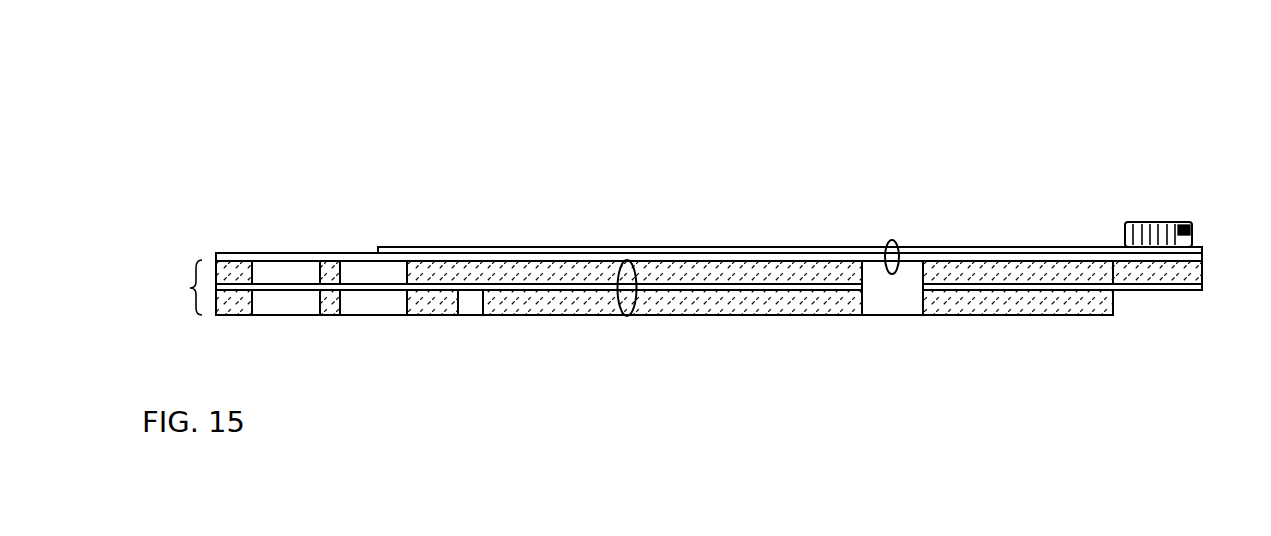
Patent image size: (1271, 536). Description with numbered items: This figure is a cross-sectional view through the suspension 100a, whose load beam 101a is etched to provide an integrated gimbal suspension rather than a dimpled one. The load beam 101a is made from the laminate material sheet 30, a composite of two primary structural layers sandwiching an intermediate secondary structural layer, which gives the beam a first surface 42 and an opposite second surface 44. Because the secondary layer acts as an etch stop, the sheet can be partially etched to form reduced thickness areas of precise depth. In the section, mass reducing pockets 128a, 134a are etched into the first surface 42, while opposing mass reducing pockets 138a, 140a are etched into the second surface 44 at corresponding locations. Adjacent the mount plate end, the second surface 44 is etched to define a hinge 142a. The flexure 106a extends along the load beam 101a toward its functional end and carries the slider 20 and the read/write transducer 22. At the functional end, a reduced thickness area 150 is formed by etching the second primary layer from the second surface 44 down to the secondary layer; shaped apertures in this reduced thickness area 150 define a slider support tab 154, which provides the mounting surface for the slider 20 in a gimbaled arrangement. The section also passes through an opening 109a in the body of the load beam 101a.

The suspension 100a is at (198, 166).
The laminate material sheet 30 is at (179, 287).
The first surface 42 is at (733, 258).
The second surface 44 is at (690, 317).
The mass reducing pocket 128a is at (277, 272).
The mass reducing pocket 134a is at (360, 265).
The mass reducing pocket 138a is at (292, 305).
The mass reducing pocket 140a is at (363, 305).
The hinge 142a is at (472, 305).
The load beam 101a is at (627, 258).
The flexure 106a is at (890, 240).
The opening 109a is at (897, 295).
The slider 20 is at (1152, 222).
The read/write transducer 22 is at (1190, 224).
The slider support tab 154 is at (1152, 273).
The reduced thickness area 150 is at (1163, 308).